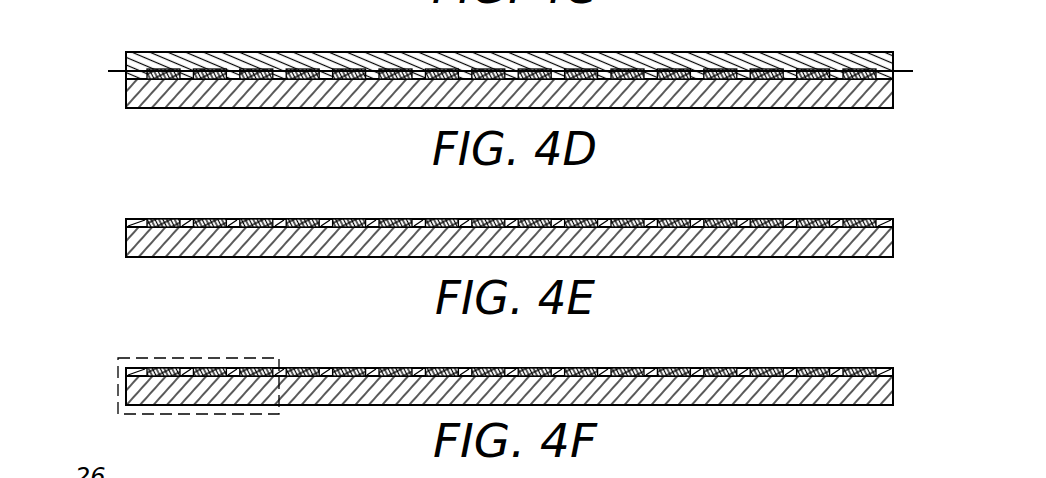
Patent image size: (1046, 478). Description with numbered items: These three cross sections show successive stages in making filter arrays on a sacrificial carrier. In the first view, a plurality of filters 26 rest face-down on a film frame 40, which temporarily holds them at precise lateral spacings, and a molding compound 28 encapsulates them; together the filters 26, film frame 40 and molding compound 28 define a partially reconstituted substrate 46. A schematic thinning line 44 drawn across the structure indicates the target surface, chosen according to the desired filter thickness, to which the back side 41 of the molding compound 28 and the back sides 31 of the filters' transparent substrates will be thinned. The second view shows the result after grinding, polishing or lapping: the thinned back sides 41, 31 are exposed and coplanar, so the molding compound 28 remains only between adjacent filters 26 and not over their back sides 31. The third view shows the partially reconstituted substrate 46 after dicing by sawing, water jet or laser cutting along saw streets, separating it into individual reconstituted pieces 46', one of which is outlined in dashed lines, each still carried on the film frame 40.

In FIG. 4D, the filters 26 is at (255, 70).
In FIG. 4E, the filters 26 is at (255, 222).
In FIG. 4F, the filters 26 is at (202, 367).
In FIG. 4E, the molding compound 28 is at (788, 224).
In FIG. 4E, the back side of the optically transparent substrate 31 is at (487, 218).
In FIG. 4D, the film frame 40 is at (892, 93).
In FIG. 4E, the film frame 40 is at (892, 241).
In FIG. 4F, the film frame 40 is at (892, 391).
In FIG. 4D, the back side of the molding compound 41 is at (336, 50).
In FIG. 4E, the back side of the molding compound 41 is at (366, 217).
In FIG. 4D, the thinning line 44 is at (110, 68).
In FIG. 4D, the partially reconstituted substrate 46 is at (514, 54).
In FIG. 4E, the partially reconstituted substrate 46 is at (509, 200).
In FIG. 4F, the partially reconstituted substrate 46 is at (518, 357).
In FIG. 4F, the reconstituted pieces 46' is at (165, 357).